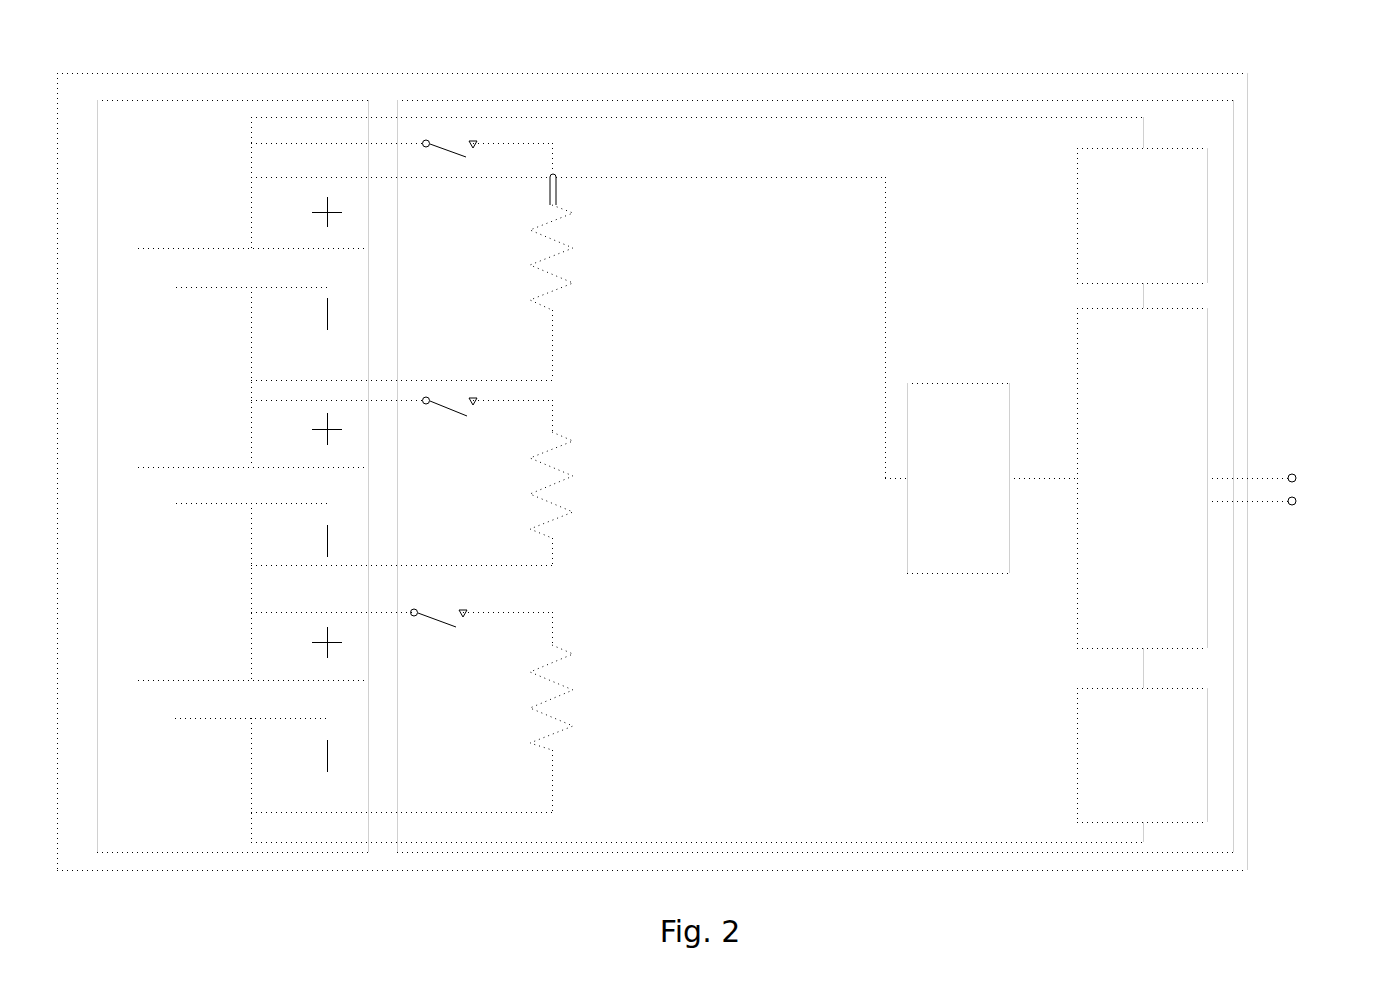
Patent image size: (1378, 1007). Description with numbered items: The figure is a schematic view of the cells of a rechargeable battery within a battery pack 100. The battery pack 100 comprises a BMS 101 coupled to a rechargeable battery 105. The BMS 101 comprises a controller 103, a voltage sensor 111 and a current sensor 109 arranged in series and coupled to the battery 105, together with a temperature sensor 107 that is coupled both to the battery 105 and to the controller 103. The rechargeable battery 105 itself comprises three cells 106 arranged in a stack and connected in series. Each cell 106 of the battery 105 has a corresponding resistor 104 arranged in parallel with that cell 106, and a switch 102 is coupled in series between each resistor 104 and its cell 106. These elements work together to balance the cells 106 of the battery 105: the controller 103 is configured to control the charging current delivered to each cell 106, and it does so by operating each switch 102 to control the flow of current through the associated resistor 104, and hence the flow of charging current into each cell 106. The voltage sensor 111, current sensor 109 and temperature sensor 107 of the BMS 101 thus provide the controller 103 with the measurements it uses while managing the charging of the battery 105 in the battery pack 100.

The battery pack 100 is at (1247, 168).
The BMS 101 is at (1170, 852).
The switch 102 is at (450, 133).
The controller 103 is at (1207, 530).
The resistor 104 is at (556, 180).
The rechargeable battery 105 is at (263, 852).
The cell 106 is at (245, 467).
The temperature sensor 107 is at (950, 383).
The current sensor 109 is at (1207, 237).
The voltage sensor 111 is at (1207, 773).